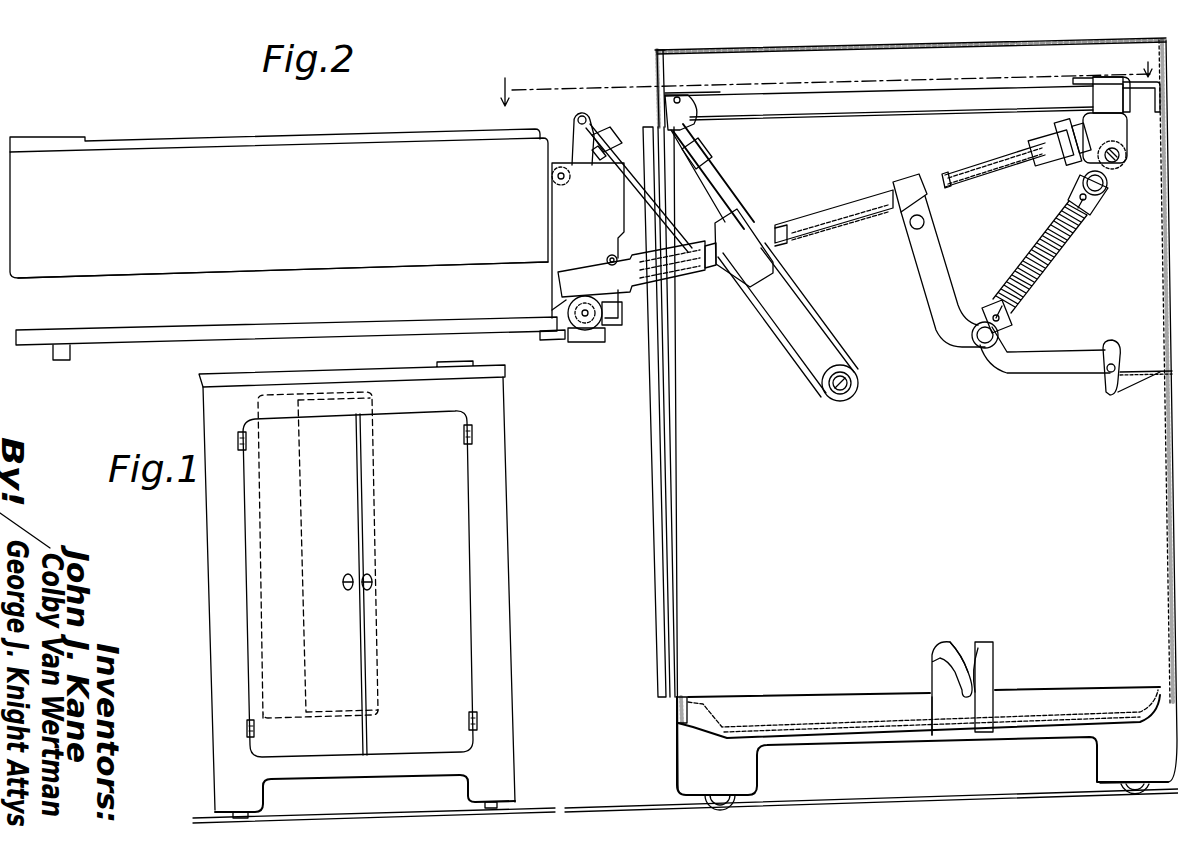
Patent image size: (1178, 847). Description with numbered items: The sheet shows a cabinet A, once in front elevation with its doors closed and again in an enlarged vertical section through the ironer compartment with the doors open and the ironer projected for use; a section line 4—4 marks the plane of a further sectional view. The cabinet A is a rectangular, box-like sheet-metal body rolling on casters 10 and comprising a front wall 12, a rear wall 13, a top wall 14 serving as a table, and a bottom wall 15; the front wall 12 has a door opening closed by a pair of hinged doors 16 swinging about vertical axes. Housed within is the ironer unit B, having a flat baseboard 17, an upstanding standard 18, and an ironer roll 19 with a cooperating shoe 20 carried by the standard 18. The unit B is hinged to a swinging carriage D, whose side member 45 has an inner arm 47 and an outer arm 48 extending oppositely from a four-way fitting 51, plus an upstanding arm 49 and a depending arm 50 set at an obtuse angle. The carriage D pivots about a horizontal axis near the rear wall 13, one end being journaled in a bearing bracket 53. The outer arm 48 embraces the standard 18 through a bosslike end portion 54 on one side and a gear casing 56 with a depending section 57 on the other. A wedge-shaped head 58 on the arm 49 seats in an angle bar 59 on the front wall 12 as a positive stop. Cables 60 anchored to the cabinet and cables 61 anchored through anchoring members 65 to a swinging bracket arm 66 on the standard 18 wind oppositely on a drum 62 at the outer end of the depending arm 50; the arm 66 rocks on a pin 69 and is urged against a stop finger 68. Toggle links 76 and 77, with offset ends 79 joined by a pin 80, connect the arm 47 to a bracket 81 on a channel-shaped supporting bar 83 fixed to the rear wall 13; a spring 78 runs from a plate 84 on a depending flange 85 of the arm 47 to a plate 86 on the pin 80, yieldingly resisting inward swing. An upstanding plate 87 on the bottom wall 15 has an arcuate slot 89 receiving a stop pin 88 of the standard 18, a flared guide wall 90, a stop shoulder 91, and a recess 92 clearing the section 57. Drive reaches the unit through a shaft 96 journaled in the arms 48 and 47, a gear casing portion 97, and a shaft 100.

In FIG. 2, the casters 10 is at (740, 798).
In FIG. 1, the casters 10 is at (227, 813).
In FIG. 2, the front wall 12 is at (660, 97).
In FIG. 1, the front wall 12 is at (230, 670).
In FIG. 2, the rear wall 13 is at (1170, 518).
In FIG. 2, the top wall 14 is at (922, 47).
In FIG. 2, the bottom wall 15 is at (884, 735).
In FIG. 2, the hinged doors 16 is at (652, 482).
In FIG. 1, the hinged doors 16 is at (250, 547).
In FIG. 2, the baseboard 17 is at (128, 337).
In FIG. 1, the baseboard 17 is at (258, 405).
In FIG. 2, the standard 18 is at (567, 262).
In FIG. 2, the ironer roll 19 is at (377, 260).
In FIG. 1, the ironer roll 19 is at (300, 499).
In FIG. 2, the shoe 20 is at (470, 123).
In FIG. 2, the side member 45 is at (943, 172).
In FIG. 2, the inner arm 47 is at (898, 186).
In FIG. 2, the outer arm 48 is at (702, 277).
In FIG. 2, the upstanding arm 49 is at (705, 174).
In FIG. 2, the depending arm 50 is at (790, 312).
In FIG. 2, the four-way fitting 51 is at (748, 232).
In FIG. 2, the bearing bracket 53 is at (1112, 70).
In FIG. 2, the bosslike end portion 54 is at (630, 262).
In FIG. 2, the gear casing 56 is at (567, 285).
In FIG. 2, the depending section 57 is at (580, 334).
In FIG. 2, the wedge-shaped head 58 is at (679, 96).
In FIG. 2, the angle bar 59 is at (672, 93).
In FIG. 2, the cable members 60 is at (795, 273).
In FIG. 2, the cable members 61 is at (713, 233).
In FIG. 2, the drum 62 is at (848, 400).
In FIG. 2, the anchoring members 65 is at (607, 147).
In FIG. 2, the swinging bracket arm 66 is at (577, 133).
In FIG. 2, the stop finger 68 is at (600, 160).
In FIG. 2, the pin 69 is at (563, 182).
In FIG. 2, the toggle link 76 is at (930, 280).
In FIG. 2, the toggle link 77 is at (1057, 373).
In FIG. 2, the spring 78 is at (1057, 260).
In FIG. 2, the offset ends 79 is at (981, 345).
In FIG. 2, the pin 80 is at (995, 335).
In FIG. 2, the bracket 81 is at (1118, 388).
In FIG. 2, the channel-shaped supporting bar 83 is at (1145, 370).
In FIG. 2, the plate 84 is at (1100, 197).
In FIG. 2, the depending flange 85 is at (1102, 180).
In FIG. 2, the plate 86 is at (1004, 320).
In FIG. 2, the upstanding plate 87 is at (935, 664).
In FIG. 2, the stop pin 88 is at (610, 257).
In FIG. 2, the arcuate slot 89 is at (985, 672).
In FIG. 2, the guide wall 90 is at (953, 640).
In FIG. 2, the stop shoulder 91 is at (985, 645).
In FIG. 2, the recess 92 is at (940, 676).
In FIG. 2, the shaft 96 is at (650, 298).
In FIG. 2, the gear casing portion 97 is at (1122, 157).
In FIG. 2, the shaft 100 is at (1090, 165).
In FIG. 2, the section line 4- 4 is at (816, 77).
In FIG. 2, the cabinet A is at (655, 48).
In FIG. 1, the cabinet A is at (203, 407).
In FIG. 2, the ironer unit B is at (373, 150).
In FIG. 2, the swinging carriage D is at (1012, 152).